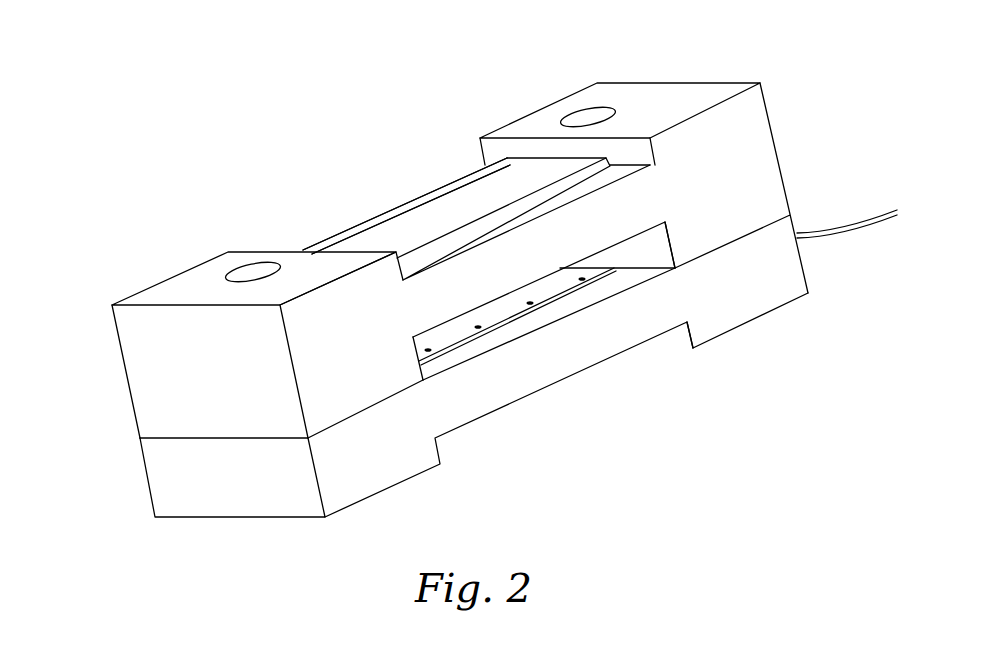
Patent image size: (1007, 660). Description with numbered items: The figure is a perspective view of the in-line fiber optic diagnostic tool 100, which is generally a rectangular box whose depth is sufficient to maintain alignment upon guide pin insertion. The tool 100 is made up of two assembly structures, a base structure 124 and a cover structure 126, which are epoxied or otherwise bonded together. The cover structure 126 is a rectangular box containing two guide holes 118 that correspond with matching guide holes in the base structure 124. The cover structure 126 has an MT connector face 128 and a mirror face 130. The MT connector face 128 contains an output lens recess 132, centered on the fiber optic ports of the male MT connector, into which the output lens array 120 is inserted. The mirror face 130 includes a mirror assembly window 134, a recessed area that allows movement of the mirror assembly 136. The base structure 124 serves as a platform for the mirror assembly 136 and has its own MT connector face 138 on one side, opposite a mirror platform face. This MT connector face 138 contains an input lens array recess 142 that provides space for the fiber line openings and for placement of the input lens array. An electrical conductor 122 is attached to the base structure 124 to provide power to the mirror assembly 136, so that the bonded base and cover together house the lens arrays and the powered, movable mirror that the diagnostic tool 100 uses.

The in-line fiber optic diagnostic tool 100 is at (634, 425).
The guide holes 118 is at (252, 272).
The output lens array 120 is at (482, 191).
The electrical conductor 122 is at (858, 205).
The base structure 124 is at (233, 493).
The cover structure 126 is at (165, 375).
The MT connector face 128 is at (167, 286).
The mirror face 130 is at (183, 440).
The output lens recess 132 is at (394, 211).
The mirror assembly window 134 is at (607, 248).
The mirror assembly 136 is at (512, 322).
The MT connector face 138 is at (753, 302).
The input lens array recess 142 is at (668, 338).